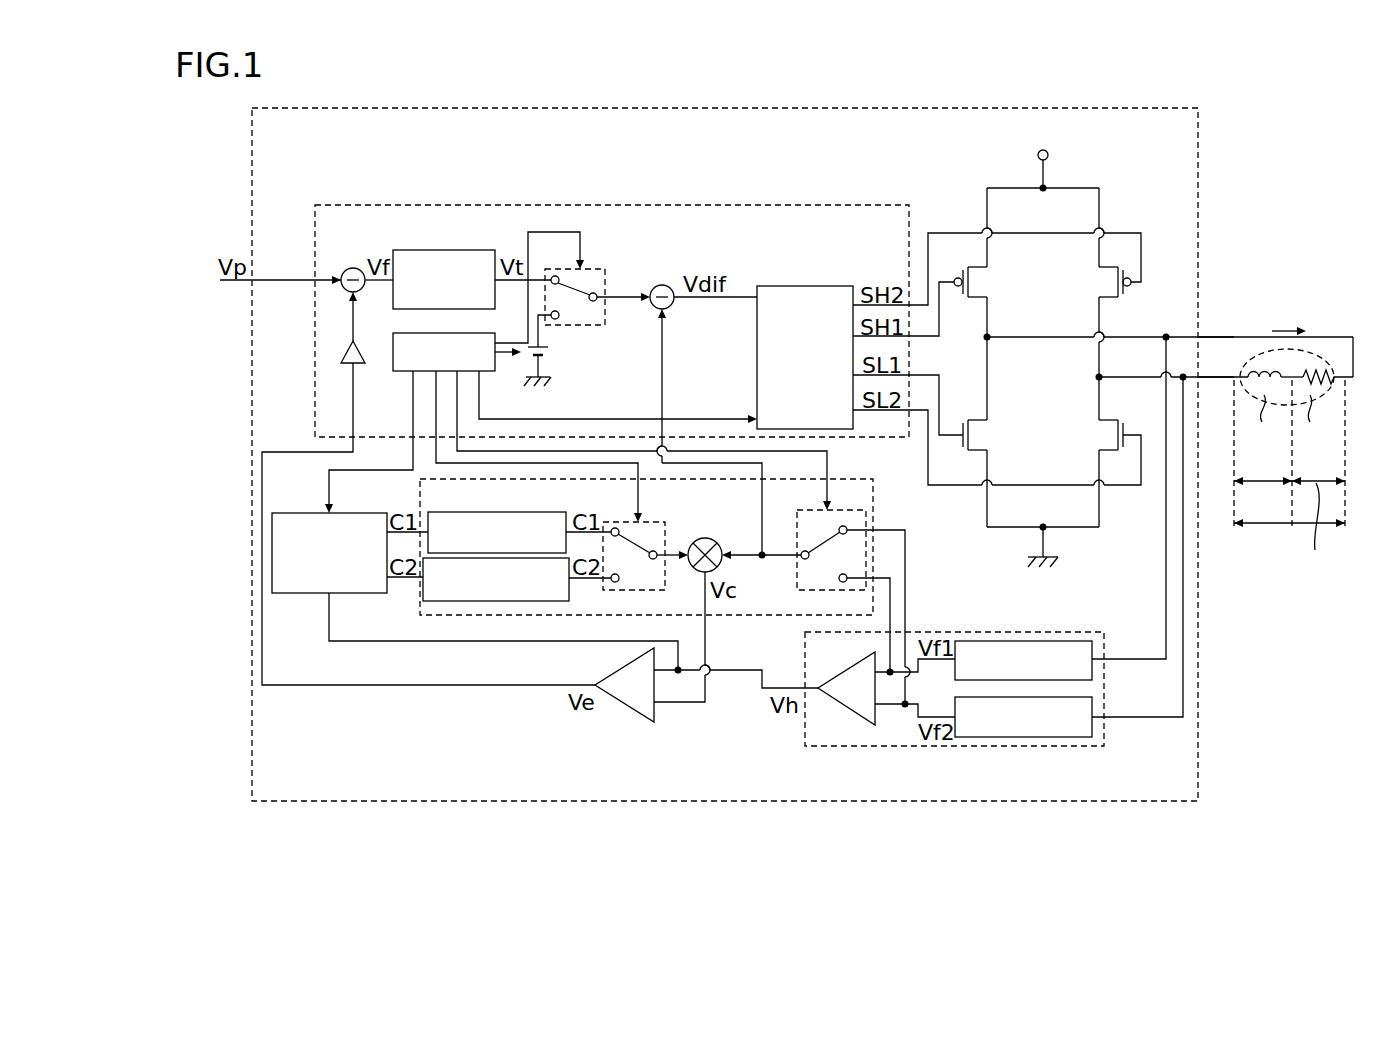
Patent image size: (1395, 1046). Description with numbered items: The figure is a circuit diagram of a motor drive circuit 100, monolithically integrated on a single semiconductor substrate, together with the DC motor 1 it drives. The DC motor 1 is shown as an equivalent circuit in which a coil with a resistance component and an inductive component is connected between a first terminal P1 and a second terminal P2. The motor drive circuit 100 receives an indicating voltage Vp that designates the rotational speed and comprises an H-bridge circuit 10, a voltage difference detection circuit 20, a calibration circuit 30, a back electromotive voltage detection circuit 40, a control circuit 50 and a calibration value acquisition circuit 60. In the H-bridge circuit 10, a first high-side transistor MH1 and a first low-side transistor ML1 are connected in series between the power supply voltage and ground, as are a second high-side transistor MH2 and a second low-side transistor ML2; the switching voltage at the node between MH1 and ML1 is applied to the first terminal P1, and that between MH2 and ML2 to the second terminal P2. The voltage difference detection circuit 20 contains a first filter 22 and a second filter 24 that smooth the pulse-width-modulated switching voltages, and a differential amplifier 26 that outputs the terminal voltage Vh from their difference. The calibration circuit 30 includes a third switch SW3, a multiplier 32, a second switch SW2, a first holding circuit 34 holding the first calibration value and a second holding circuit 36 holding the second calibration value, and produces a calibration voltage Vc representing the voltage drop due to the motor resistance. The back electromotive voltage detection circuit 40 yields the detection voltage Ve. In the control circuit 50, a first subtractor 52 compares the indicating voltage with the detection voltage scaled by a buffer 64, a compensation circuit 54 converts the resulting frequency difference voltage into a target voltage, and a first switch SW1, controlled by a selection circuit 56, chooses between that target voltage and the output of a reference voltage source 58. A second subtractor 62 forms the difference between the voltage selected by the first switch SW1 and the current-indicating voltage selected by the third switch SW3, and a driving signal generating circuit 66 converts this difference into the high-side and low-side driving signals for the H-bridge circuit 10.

The DC motor 1 is at (1258, 352).
The H-bridge circuit 10 is at (1008, 354).
The voltage difference detection circuit 20 is at (1072, 748).
The first filter 22 is at (1093, 645).
The second filter 24 is at (1093, 727).
The differential amplifier 26 is at (850, 712).
The calibration circuit 30 is at (878, 505).
The multiplier 32 is at (712, 541).
The first holding circuit 34 is at (540, 512).
The second holding circuit 36 is at (420, 598).
The back electromotive voltage detection circuit 40 is at (625, 708).
The control circuit 50 is at (718, 205).
The first subtractor 52 is at (353, 268).
The compensation circuit 54 is at (487, 251).
The selection circuit 56 is at (495, 334).
The reference voltage source 58 is at (550, 354).
The calibration value acquisition circuit 60 is at (338, 514).
The second subtractor 62 is at (660, 286).
The buffer 64 is at (348, 363).
The driving signal generating circuit 66 is at (836, 281).
The motor drive circuit 100 is at (738, 802).
The first switch SW1 is at (608, 258).
The second switch SW2 is at (667, 510).
The third switch SW3 is at (850, 510).
The first high-side transistor MH1 is at (1006, 282).
The second high-side transistor MH2 is at (1105, 280).
The first low-side transistor ML1 is at (1010, 436).
The second low-side transistor ML2 is at (1105, 430).
The first terminal P1 is at (1222, 335).
The second terminal P2 is at (1215, 383).